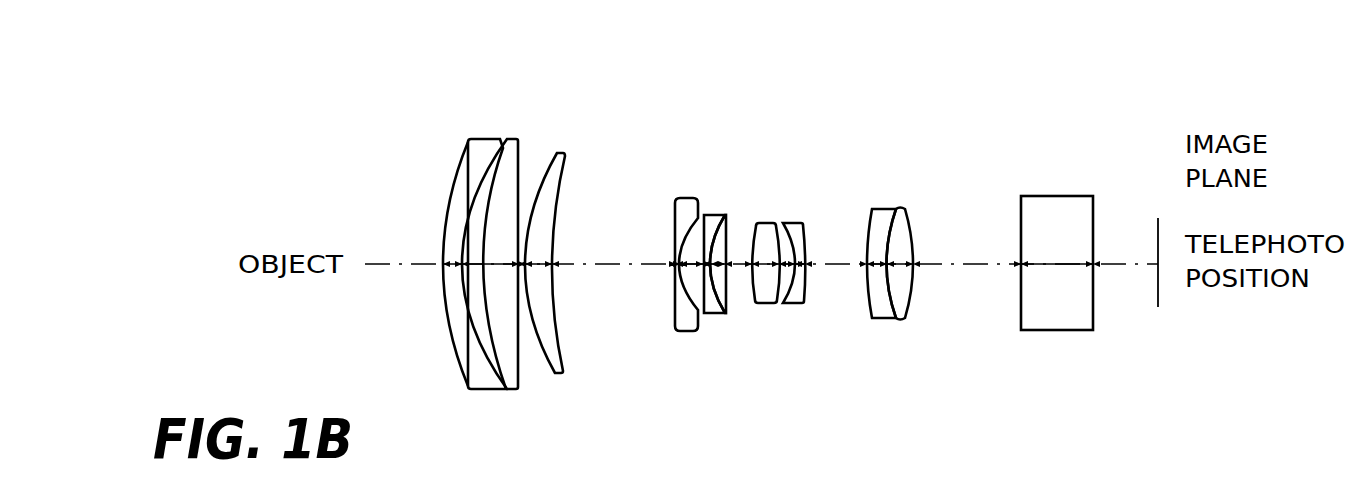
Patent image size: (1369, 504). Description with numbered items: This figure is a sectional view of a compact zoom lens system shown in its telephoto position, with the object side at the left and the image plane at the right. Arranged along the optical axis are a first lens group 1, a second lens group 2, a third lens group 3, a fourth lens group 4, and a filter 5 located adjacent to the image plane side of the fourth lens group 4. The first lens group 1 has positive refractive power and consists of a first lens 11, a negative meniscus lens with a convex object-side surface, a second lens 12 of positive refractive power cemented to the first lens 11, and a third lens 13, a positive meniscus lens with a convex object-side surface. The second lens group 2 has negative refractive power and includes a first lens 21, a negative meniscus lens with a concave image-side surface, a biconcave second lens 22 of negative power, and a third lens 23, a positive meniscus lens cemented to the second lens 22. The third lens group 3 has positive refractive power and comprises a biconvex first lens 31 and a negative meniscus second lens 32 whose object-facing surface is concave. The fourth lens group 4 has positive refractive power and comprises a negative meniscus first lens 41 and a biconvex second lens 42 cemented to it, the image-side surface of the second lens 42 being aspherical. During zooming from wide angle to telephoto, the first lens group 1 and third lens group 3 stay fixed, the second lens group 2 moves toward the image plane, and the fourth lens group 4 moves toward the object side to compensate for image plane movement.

The first lens group 1 is at (473, 67).
The first lens 11 is at (488, 139).
The second lens 12 is at (512, 139).
The third lens 13 is at (563, 153).
The second lens group 2 is at (663, 145).
The first lens 21 is at (684, 198).
The second lens 22 is at (708, 215).
The third lens 23 is at (727, 222).
The third lens group 3 is at (773, 162).
The first lens 31 is at (766, 223).
The second lens 32 is at (795, 223).
The fourth lens group 4 is at (870, 160).
The first lens 41 is at (885, 209).
The second lens 42 is at (907, 210).
The filter 5 is at (1060, 196).